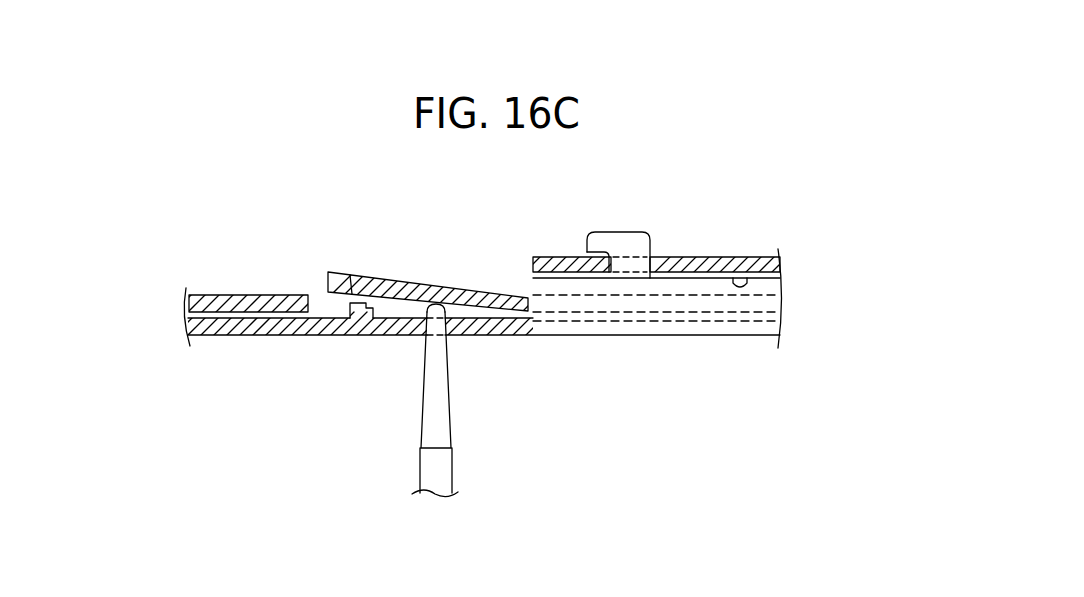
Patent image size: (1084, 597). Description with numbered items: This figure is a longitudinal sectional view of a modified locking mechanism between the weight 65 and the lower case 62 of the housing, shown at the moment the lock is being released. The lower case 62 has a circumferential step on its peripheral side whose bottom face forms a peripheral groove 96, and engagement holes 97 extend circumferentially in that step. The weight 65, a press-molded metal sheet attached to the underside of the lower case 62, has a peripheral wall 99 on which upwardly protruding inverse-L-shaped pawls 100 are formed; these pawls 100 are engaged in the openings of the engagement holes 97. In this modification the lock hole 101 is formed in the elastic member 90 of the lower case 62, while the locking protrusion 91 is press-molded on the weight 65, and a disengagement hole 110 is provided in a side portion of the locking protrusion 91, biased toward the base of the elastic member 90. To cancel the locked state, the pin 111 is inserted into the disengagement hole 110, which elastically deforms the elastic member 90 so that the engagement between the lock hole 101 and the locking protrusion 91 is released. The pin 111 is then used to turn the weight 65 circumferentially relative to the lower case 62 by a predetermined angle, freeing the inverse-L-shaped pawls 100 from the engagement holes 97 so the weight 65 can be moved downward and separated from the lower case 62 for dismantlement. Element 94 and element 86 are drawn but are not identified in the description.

The lower case 62 is at (235, 293).
The weight 65 is at (497, 337).
The hidden channel 86 is at (742, 296).
The elastic member 90 is at (457, 292).
The locking protrusion 91 is at (350, 304).
The cover plate section 94 is at (553, 257).
The peripheral groove 96 is at (747, 272).
The engagement holes 97 is at (677, 256).
The peripheral wall 99 is at (662, 330).
The inverse-L-shaped pawls 100 is at (617, 243).
The lock hole 101 is at (357, 277).
The disengagement hole 110 is at (425, 325).
The pin 111 is at (440, 410).